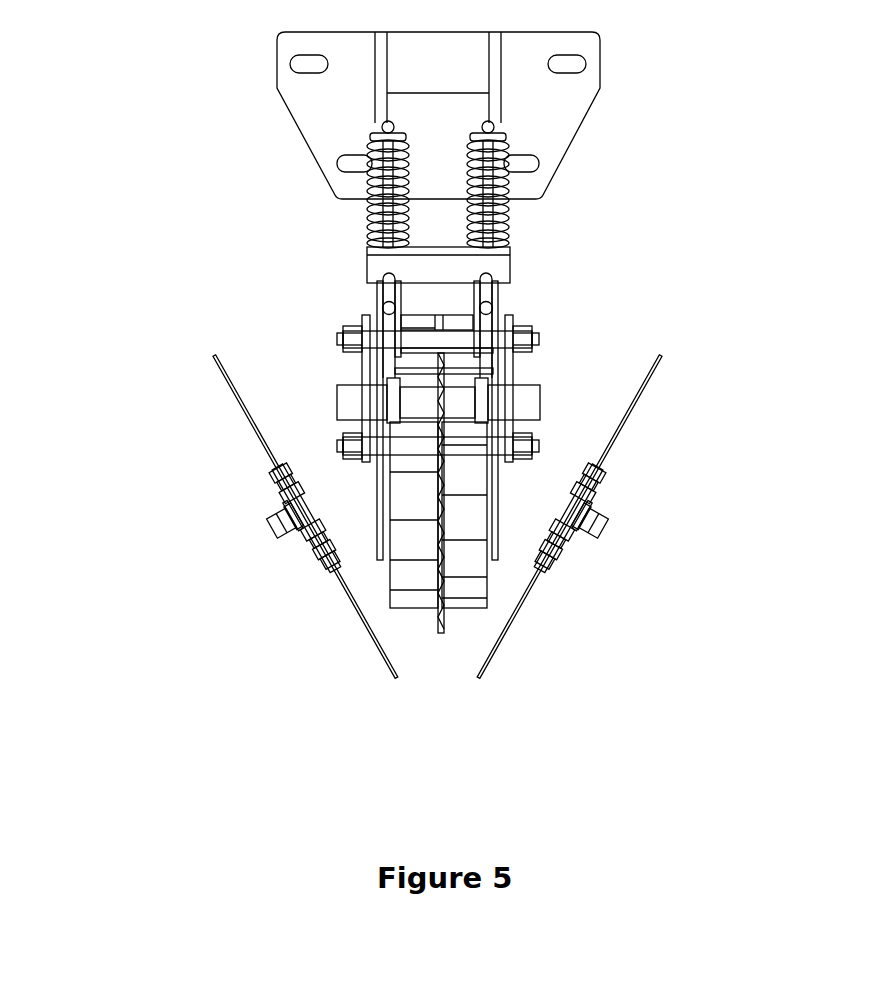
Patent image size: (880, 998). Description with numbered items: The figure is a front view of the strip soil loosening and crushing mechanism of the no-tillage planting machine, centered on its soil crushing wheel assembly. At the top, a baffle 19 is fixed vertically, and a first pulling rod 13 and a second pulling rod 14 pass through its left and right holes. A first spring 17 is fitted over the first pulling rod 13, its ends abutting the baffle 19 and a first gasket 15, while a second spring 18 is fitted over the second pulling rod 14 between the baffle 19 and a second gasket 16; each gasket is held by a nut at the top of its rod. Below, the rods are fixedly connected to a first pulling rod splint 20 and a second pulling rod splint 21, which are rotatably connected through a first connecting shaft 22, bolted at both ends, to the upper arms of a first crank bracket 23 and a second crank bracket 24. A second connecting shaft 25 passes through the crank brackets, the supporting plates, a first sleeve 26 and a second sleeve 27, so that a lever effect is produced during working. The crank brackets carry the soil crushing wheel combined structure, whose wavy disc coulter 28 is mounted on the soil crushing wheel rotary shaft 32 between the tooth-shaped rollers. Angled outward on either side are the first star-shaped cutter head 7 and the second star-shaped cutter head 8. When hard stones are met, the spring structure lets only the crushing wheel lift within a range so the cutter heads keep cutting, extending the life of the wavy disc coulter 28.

The first star-shaped cutter head 7 is at (353, 608).
The second star-shaped cutter head 8 is at (525, 603).
The first pulling rod 13 is at (381, 123).
The second pulling rod 14 is at (493, 125).
The first gasket 15 is at (370, 131).
The second gasket 16 is at (506, 131).
The first spring 17 is at (372, 173).
The second spring 18 is at (510, 175).
The baffle 19 is at (430, 270).
The first pulling rod splint 20 is at (377, 303).
The second pulling rod splint 21 is at (498, 295).
The first connecting shaft 22 is at (455, 338).
The first crank bracket 23 is at (366, 370).
The second crank bracket 24 is at (509, 369).
The second connecting shaft 25 is at (528, 400).
The first sleeve 26 is at (390, 402).
The second sleeve 27 is at (485, 402).
The wavy disc coulter 28 is at (440, 628).
The soil crushing wheel rotary shaft 32 is at (535, 447).